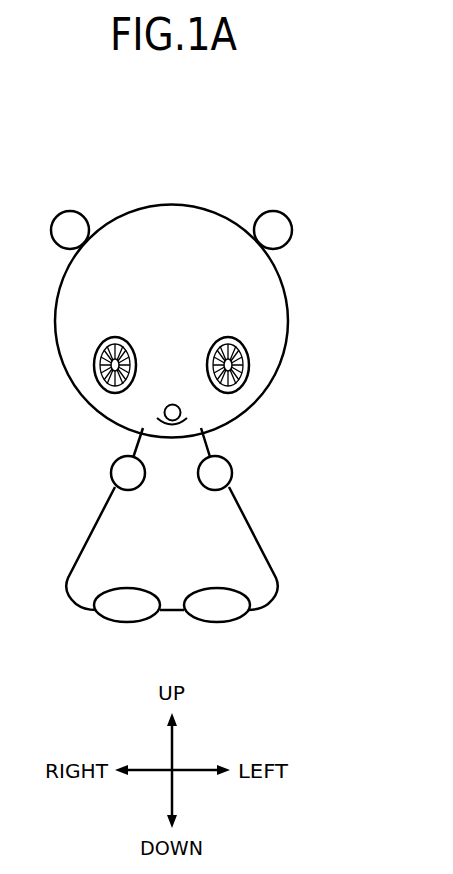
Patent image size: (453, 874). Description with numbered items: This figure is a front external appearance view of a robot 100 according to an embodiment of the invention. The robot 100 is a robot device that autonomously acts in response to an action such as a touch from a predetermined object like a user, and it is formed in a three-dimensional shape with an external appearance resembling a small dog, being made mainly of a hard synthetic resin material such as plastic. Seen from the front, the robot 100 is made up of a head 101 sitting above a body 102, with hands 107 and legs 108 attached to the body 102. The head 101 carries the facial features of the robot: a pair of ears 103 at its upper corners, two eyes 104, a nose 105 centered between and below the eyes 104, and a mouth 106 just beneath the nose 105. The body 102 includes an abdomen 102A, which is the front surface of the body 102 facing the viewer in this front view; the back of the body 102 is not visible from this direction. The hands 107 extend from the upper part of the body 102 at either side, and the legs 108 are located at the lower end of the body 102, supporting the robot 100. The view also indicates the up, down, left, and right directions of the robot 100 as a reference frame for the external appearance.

The robot 100 is at (172, 163).
The head 101 is at (288, 318).
The body 102 is at (242, 517).
The abdomen 102A is at (155, 530).
The ears 103 is at (67, 211).
The eyes 104 is at (95, 371).
The nose 105 is at (182, 416).
The mouth 106 is at (143, 430).
The hands 107 is at (112, 467).
The legs 108 is at (106, 621).